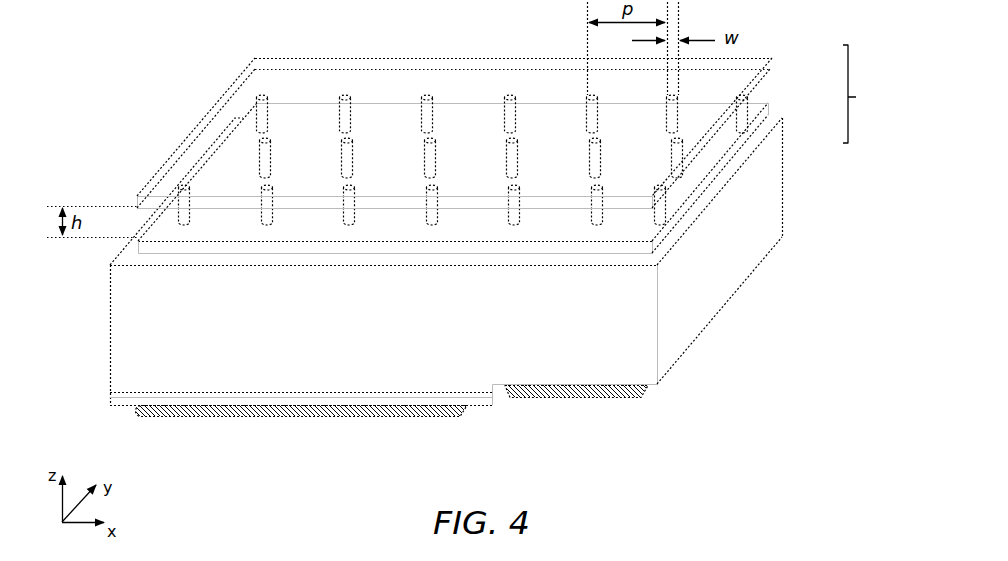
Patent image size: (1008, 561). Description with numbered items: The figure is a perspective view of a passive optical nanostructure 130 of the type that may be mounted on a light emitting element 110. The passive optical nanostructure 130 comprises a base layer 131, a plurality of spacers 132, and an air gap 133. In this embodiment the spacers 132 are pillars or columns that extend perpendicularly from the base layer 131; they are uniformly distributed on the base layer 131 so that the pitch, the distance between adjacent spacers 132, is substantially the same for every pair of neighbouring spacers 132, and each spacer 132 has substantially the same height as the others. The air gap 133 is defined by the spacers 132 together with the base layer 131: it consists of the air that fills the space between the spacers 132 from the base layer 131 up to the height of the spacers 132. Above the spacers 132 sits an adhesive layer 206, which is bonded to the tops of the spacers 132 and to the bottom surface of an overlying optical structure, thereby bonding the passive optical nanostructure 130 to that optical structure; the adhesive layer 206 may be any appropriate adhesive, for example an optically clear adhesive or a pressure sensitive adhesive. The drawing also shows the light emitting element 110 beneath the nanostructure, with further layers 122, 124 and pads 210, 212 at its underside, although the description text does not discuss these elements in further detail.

The light emitting element 110 is at (110, 340).
The lower layer 122 is at (110, 396).
The bottom layer 124 is at (108, 398).
The passive optical nanostructure 130 is at (865, 94).
The base layer 131 is at (149, 245).
The spacers 132 is at (747, 107).
The air gap 133 is at (767, 98).
The adhesive layer 206 is at (157, 178).
The first contact pad 210 is at (303, 412).
The second contact pad 212 is at (583, 392).